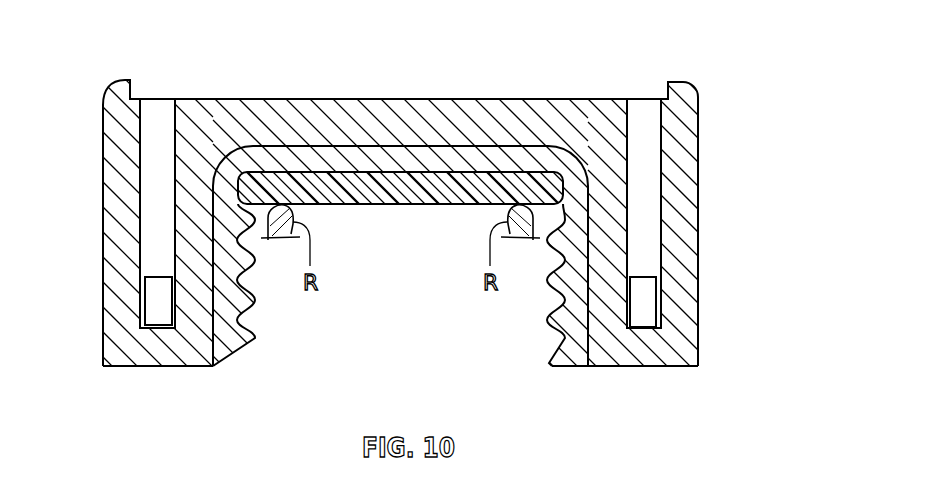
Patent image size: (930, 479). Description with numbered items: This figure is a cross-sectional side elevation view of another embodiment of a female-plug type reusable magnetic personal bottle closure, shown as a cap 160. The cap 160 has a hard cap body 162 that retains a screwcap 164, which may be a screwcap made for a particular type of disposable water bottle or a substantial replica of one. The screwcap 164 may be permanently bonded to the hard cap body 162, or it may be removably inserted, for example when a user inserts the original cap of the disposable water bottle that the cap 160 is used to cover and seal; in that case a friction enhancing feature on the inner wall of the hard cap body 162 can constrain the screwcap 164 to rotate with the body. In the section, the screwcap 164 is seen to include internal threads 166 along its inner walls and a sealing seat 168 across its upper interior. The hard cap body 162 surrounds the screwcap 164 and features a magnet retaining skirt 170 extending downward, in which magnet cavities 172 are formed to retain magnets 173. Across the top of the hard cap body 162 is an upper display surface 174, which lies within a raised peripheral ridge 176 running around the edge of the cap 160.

The cap 160 is at (235, 382).
The hard cap body 162 is at (702, 264).
The screwcap 164 is at (222, 372).
The internal threads 166 is at (256, 300).
The sealing seat 168 is at (413, 205).
The magnet retaining skirt 170 is at (659, 370).
The magnet cavities 172 is at (158, 92).
The magnets 173 is at (643, 277).
The upper display surface 174 is at (371, 99).
The raised peripheral ridge 176 is at (127, 82).